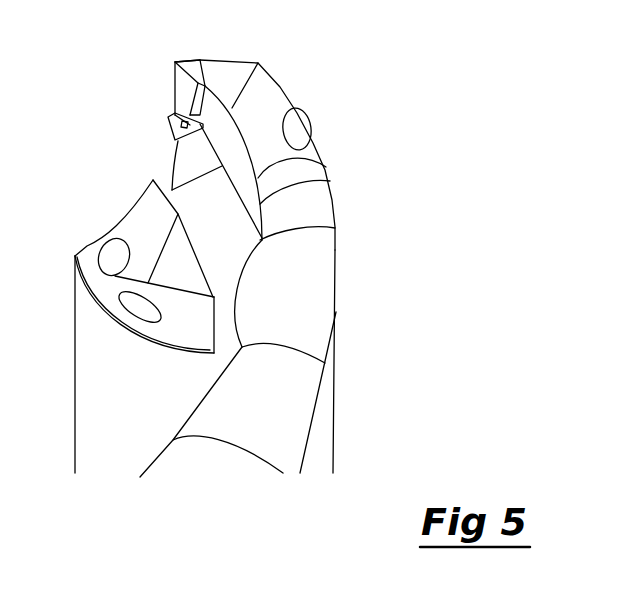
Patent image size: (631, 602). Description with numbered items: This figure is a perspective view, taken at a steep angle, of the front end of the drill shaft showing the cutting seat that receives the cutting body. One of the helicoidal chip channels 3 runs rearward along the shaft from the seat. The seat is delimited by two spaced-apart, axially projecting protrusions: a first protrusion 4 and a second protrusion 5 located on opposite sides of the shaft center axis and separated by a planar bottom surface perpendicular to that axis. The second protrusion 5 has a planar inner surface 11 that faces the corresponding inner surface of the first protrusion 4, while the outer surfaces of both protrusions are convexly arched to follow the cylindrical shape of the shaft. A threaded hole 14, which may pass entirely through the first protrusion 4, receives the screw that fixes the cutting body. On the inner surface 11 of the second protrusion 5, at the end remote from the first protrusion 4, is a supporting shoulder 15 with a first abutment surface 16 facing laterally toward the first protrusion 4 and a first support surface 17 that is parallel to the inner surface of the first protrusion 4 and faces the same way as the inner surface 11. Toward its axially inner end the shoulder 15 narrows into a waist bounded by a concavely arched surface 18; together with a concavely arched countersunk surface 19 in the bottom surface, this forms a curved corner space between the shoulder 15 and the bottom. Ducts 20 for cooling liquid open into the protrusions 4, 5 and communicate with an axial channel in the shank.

The chip channel 3 is at (170, 476).
The first protrusion 4 is at (128, 221).
The second protrusion 5 is at (289, 88).
The inner surface 11 is at (231, 181).
The threaded hole 14 is at (143, 307).
The supporting shoulder 15 is at (186, 57).
The first abutment surface 16 is at (202, 100).
The first support surface 17 is at (174, 97).
The concavely arched surface 18 is at (185, 131).
The concavely arched countersunk surface 19 is at (190, 168).
The duct 20 is at (295, 130).